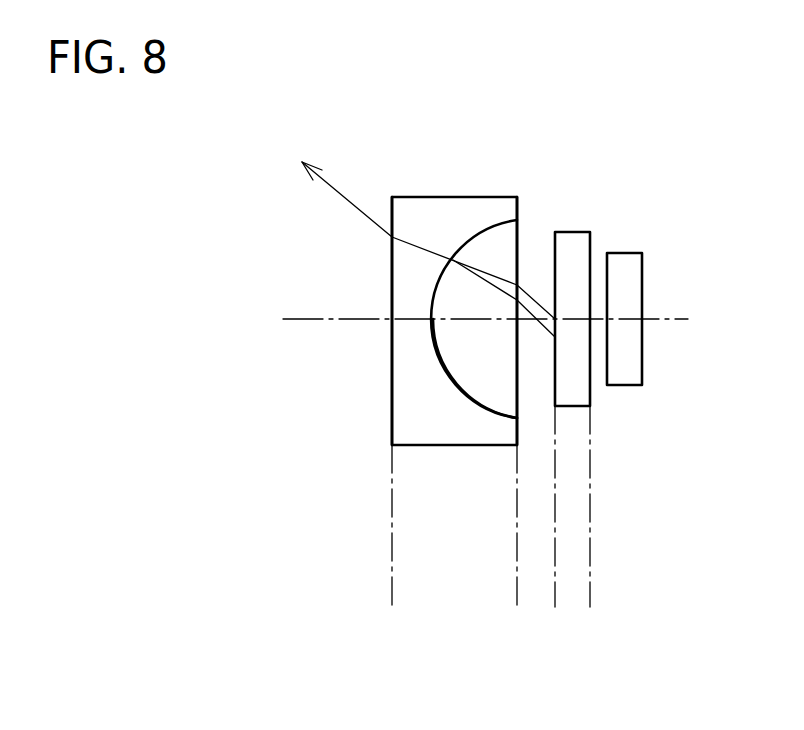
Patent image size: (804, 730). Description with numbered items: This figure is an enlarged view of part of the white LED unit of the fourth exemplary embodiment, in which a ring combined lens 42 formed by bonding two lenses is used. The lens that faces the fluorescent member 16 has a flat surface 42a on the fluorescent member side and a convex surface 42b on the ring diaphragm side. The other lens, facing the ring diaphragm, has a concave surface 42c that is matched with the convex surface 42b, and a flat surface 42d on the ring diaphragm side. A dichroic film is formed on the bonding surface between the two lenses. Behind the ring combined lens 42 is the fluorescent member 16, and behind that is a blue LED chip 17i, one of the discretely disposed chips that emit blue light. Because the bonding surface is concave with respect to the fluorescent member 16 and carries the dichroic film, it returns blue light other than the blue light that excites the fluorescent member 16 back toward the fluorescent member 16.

The ring combined lens 42 is at (435, 217).
The flat surface 42a is at (513, 415).
The convex surface 42b is at (477, 407).
The concave surface 42c is at (448, 350).
The flat surface 42d is at (392, 273).
The fluorescent member 16 is at (573, 253).
The blue LED chip 17i is at (623, 272).